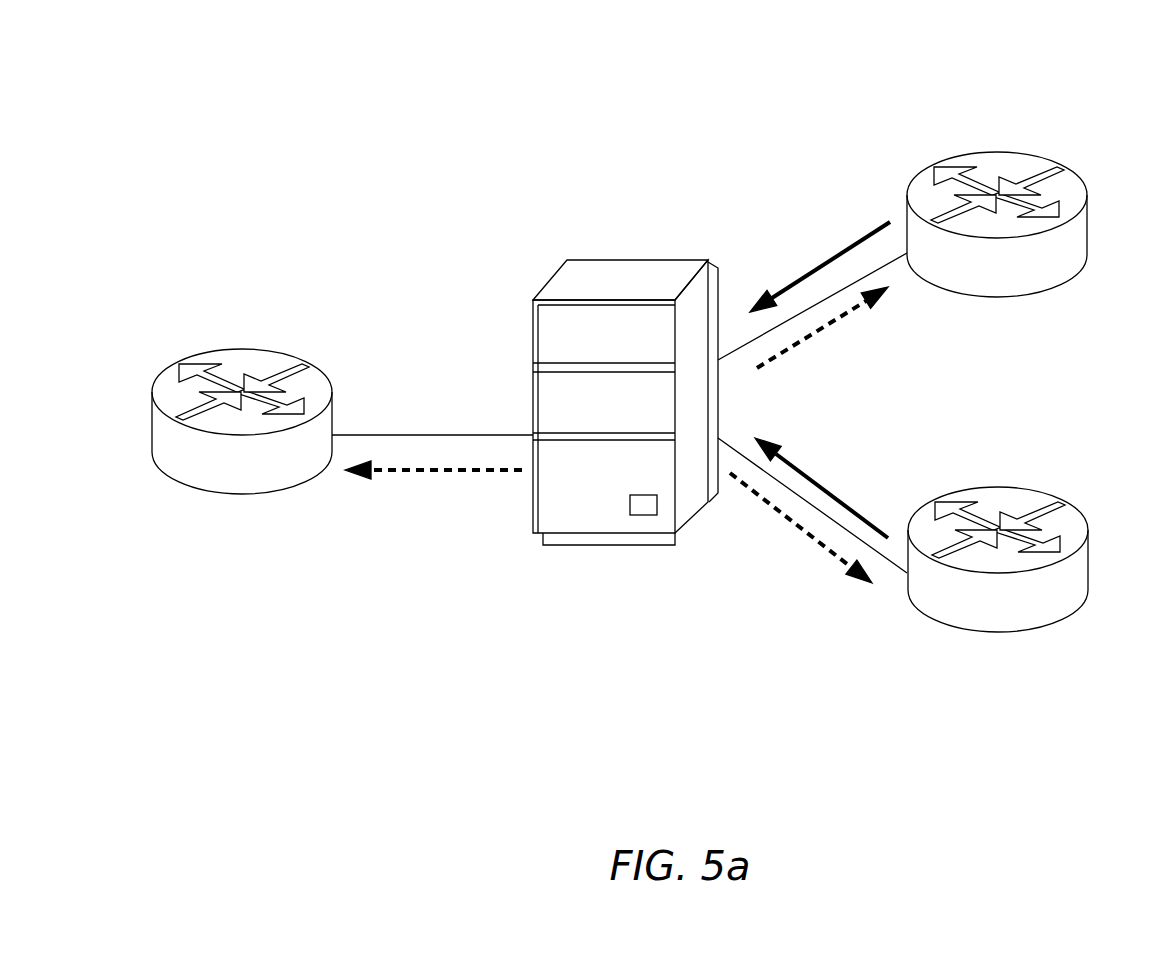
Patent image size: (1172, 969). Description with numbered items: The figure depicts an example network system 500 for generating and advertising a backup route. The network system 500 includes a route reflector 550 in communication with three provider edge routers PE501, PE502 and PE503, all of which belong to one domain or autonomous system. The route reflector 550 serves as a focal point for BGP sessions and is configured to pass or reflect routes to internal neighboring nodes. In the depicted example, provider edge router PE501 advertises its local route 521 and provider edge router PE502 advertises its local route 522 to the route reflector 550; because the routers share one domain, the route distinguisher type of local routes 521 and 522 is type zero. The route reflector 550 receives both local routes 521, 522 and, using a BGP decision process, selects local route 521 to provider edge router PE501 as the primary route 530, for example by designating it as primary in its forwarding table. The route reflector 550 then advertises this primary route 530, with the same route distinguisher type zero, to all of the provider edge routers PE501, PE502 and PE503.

The network system 500 is at (810, 73).
The route reflector 550 is at (590, 260).
The local route 521 is at (809, 230).
The local route 522 is at (868, 477).
The primary route 530 is at (667, 477).
The provider edge router PE501 is at (997, 224).
The provider edge router PE502 is at (998, 559).
The provider edge router PE503 is at (242, 421).